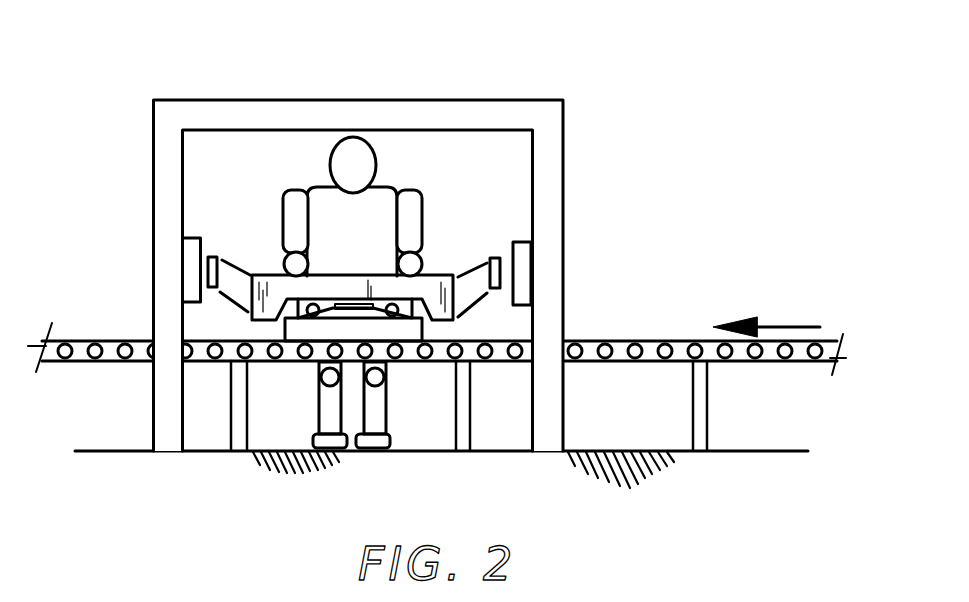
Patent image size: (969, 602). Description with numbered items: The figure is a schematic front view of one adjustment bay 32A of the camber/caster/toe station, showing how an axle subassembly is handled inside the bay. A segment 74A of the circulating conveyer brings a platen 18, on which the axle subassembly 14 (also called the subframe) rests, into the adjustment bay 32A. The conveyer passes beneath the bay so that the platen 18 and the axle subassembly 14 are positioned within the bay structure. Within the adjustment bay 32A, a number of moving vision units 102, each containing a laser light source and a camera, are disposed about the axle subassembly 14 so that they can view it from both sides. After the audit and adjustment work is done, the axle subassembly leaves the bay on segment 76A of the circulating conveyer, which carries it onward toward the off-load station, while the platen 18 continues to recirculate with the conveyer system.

The adjustment bay 32A is at (606, 79).
The moving vision unit 102 is at (192, 258).
The segment of circulating conveyer 76A is at (133, 338).
The segment of circulating conveyer 74A is at (587, 341).
The axle subassembly 14 is at (431, 278).
The platen 18 is at (372, 327).